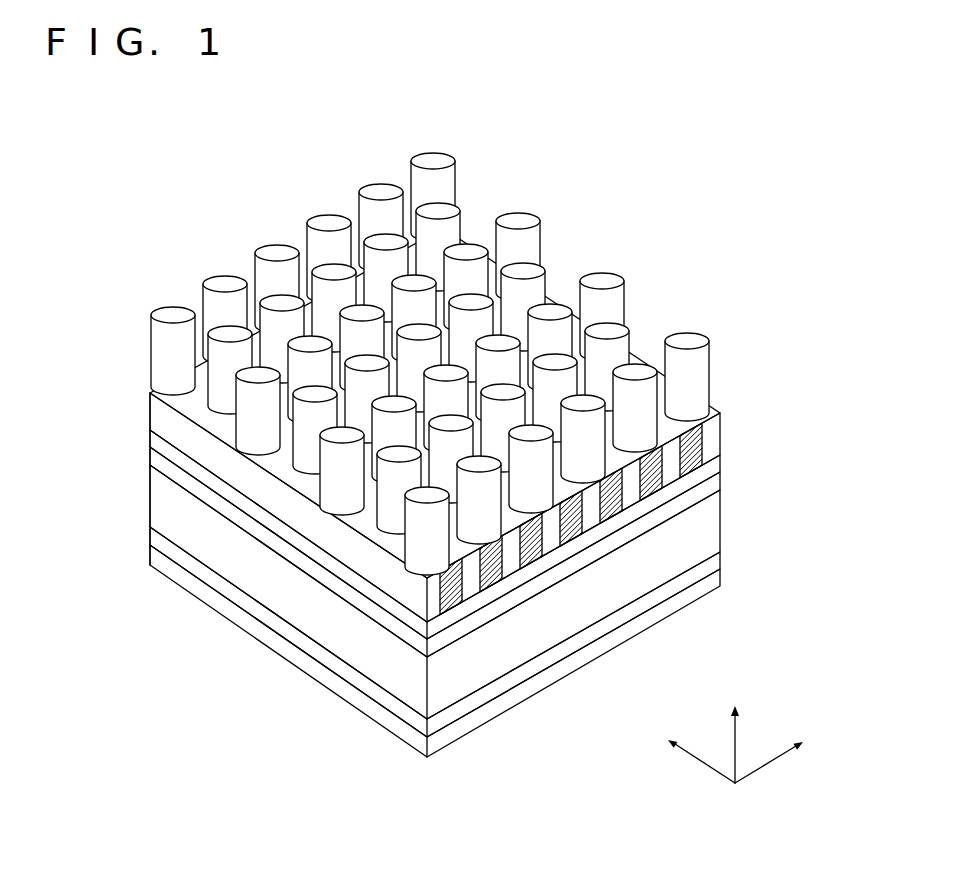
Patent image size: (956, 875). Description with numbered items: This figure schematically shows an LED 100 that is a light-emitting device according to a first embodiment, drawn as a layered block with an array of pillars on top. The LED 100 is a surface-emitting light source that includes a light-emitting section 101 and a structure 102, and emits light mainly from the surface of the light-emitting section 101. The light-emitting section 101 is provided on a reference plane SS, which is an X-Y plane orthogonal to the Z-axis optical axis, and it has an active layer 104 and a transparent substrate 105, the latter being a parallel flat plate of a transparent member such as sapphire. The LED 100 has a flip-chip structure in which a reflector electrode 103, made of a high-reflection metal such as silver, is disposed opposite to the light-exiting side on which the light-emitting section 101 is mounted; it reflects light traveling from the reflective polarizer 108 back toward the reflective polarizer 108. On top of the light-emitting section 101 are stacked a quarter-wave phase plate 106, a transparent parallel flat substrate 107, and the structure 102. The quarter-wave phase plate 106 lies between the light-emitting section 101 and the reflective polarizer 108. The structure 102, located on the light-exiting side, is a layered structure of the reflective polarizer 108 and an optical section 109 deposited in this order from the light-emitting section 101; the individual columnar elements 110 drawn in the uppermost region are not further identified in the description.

The LED 100 is at (552, 172).
The light-emitting section 101 is at (808, 503).
The structure 102 is at (808, 372).
The reflector electrode 103 is at (706, 588).
The active layer 104 is at (706, 562).
The transparent substrate 105 is at (706, 533).
The λ/4-phase plate 106 is at (706, 484).
The substrate 107 is at (706, 465).
The reflective polarizer 108 is at (706, 434).
The optical section 109 is at (730, 392).
The columnar pillar 110 is at (612, 303).
The reference plane SS is at (150, 542).